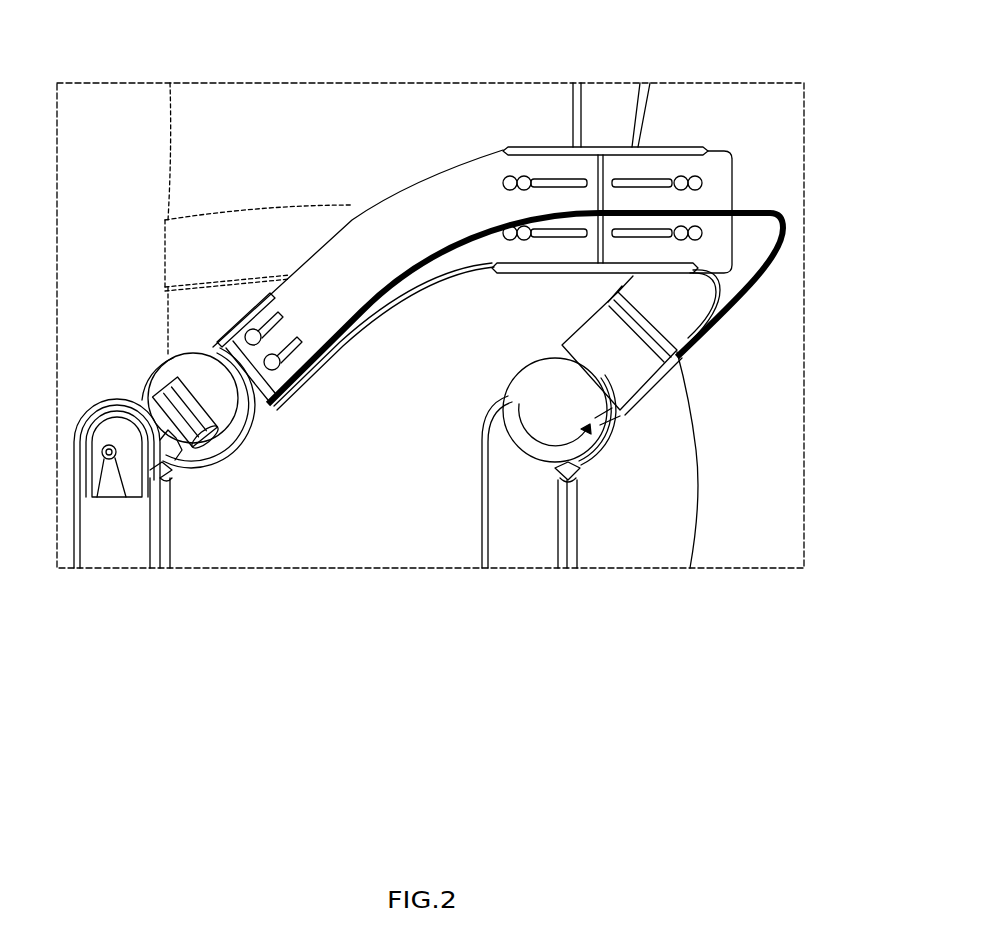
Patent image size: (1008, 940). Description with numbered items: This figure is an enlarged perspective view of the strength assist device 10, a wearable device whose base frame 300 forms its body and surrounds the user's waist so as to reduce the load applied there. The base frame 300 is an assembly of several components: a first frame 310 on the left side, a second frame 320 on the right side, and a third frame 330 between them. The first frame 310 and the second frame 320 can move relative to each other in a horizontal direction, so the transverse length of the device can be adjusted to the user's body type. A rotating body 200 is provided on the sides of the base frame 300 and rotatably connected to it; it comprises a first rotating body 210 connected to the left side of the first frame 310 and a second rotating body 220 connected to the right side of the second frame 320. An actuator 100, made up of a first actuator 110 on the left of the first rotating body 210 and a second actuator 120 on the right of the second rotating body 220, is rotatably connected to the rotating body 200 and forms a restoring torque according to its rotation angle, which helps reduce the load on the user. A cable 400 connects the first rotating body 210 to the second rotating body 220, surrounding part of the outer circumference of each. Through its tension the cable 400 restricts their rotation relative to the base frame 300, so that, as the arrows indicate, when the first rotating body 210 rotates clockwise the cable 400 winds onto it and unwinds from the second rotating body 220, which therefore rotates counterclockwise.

The strength assist device 10 is at (362, 110).
The actuator 100 is at (386, 557).
The first actuator 110 is at (115, 548).
The second actuator 120 is at (522, 548).
The rotating body 200 is at (441, 519).
The first rotating body 210 is at (193, 365).
The second rotating body 220 is at (613, 430).
The base frame 300 is at (496, 403).
The first frame 310 is at (478, 177).
The second frame 320 is at (715, 170).
The third frame 330 is at (607, 97).
The cable 400 is at (788, 223).